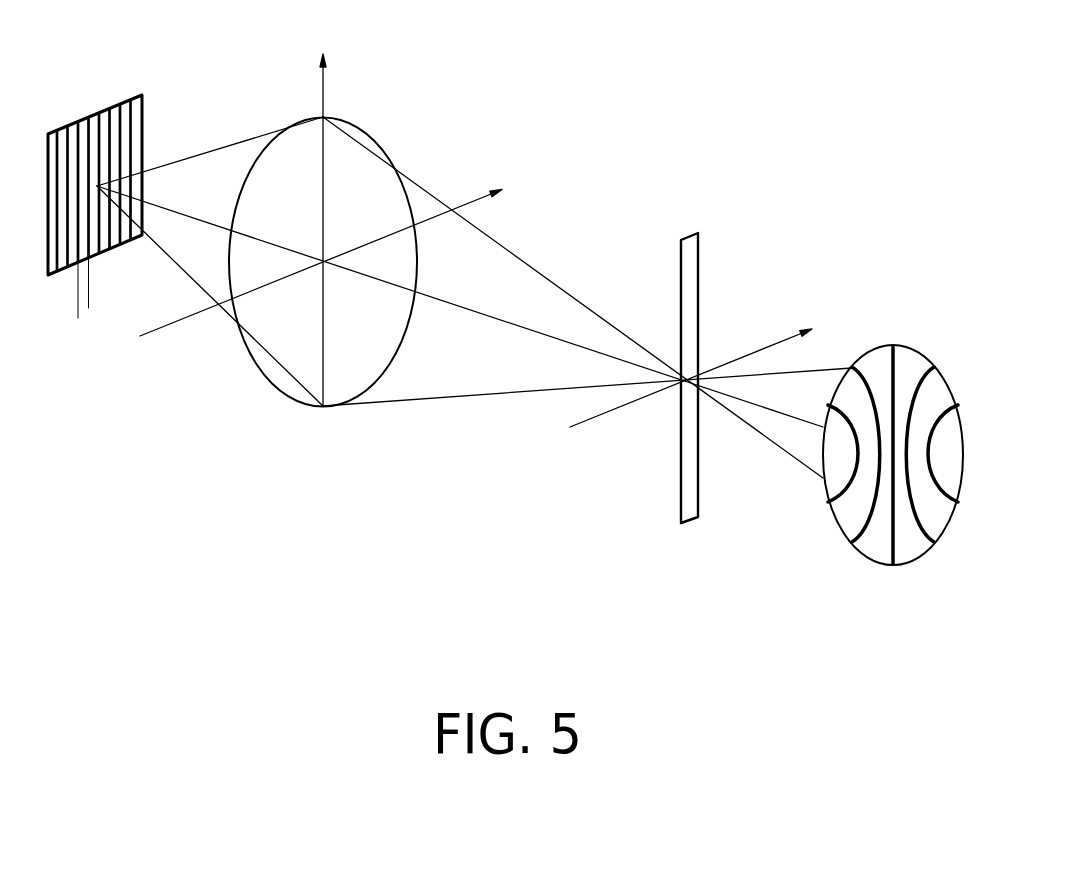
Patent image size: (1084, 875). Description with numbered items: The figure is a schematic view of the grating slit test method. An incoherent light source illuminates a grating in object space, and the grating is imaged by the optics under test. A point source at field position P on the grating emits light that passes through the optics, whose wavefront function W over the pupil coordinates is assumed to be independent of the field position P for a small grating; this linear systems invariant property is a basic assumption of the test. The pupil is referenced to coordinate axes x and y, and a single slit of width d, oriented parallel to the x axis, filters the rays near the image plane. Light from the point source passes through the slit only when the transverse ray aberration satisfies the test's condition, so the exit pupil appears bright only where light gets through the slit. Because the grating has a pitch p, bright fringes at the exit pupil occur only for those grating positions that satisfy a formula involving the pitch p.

The field position / point source P is at (101, 169).
The grating pitch p is at (120, 297).
The wavefront function W is at (323, 209).
The x-axis x is at (476, 297).
The y-axis y is at (332, 228).
The slit width d is at (728, 189).